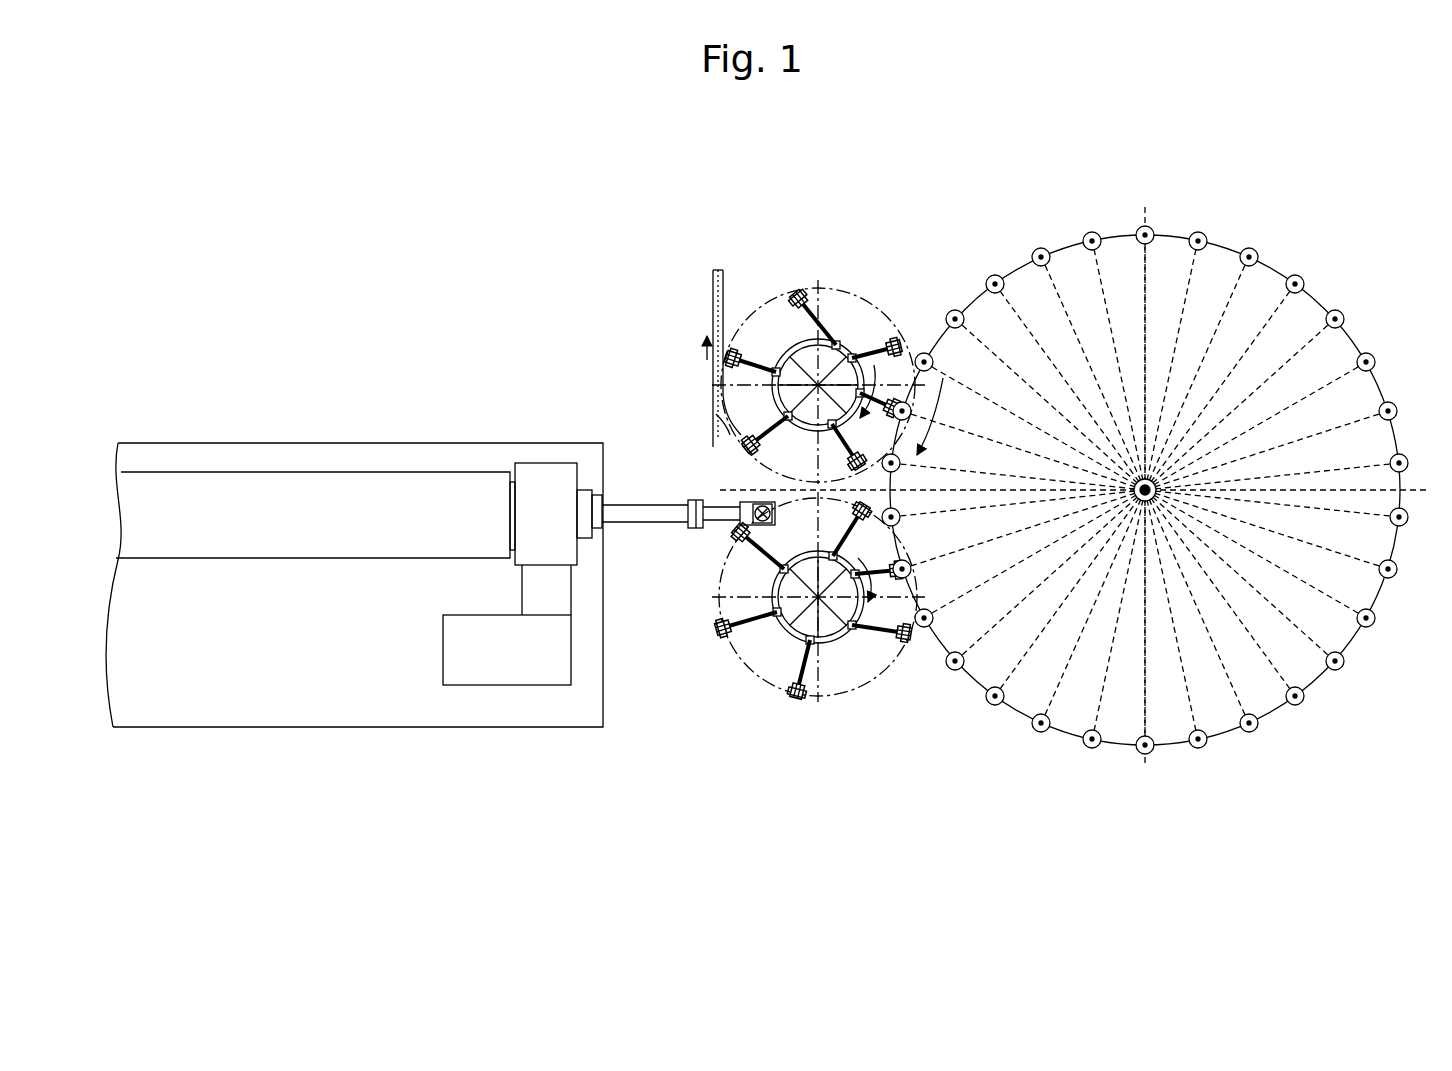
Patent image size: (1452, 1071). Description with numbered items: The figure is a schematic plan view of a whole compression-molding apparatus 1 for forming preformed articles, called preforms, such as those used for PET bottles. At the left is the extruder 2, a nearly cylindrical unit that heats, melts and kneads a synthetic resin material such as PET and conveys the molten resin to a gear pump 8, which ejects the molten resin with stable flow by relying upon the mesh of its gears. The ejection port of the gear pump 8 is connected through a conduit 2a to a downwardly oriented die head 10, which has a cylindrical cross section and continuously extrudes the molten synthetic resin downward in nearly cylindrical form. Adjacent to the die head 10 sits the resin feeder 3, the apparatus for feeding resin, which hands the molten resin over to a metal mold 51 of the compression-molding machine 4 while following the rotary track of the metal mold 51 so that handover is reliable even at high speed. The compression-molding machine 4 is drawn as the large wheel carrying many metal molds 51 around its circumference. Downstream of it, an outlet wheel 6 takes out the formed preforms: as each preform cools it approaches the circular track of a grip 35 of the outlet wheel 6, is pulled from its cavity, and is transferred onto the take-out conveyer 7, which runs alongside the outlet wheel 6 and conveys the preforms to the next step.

The container transfer apparatus 1 is at (500, 310).
The extruder 2 is at (162, 458).
The conduit 2a is at (647, 515).
The resin feeder 3 is at (712, 687).
The compression-molding machine 4 is at (1074, 493).
The metal mold 51 is at (1036, 250).
The outlet wheel 6 is at (818, 354).
The take-out conveyer 7 is at (710, 285).
The gear pump 8 is at (545, 497).
The die head 10 is at (758, 510).
The grip 35 is at (800, 322).